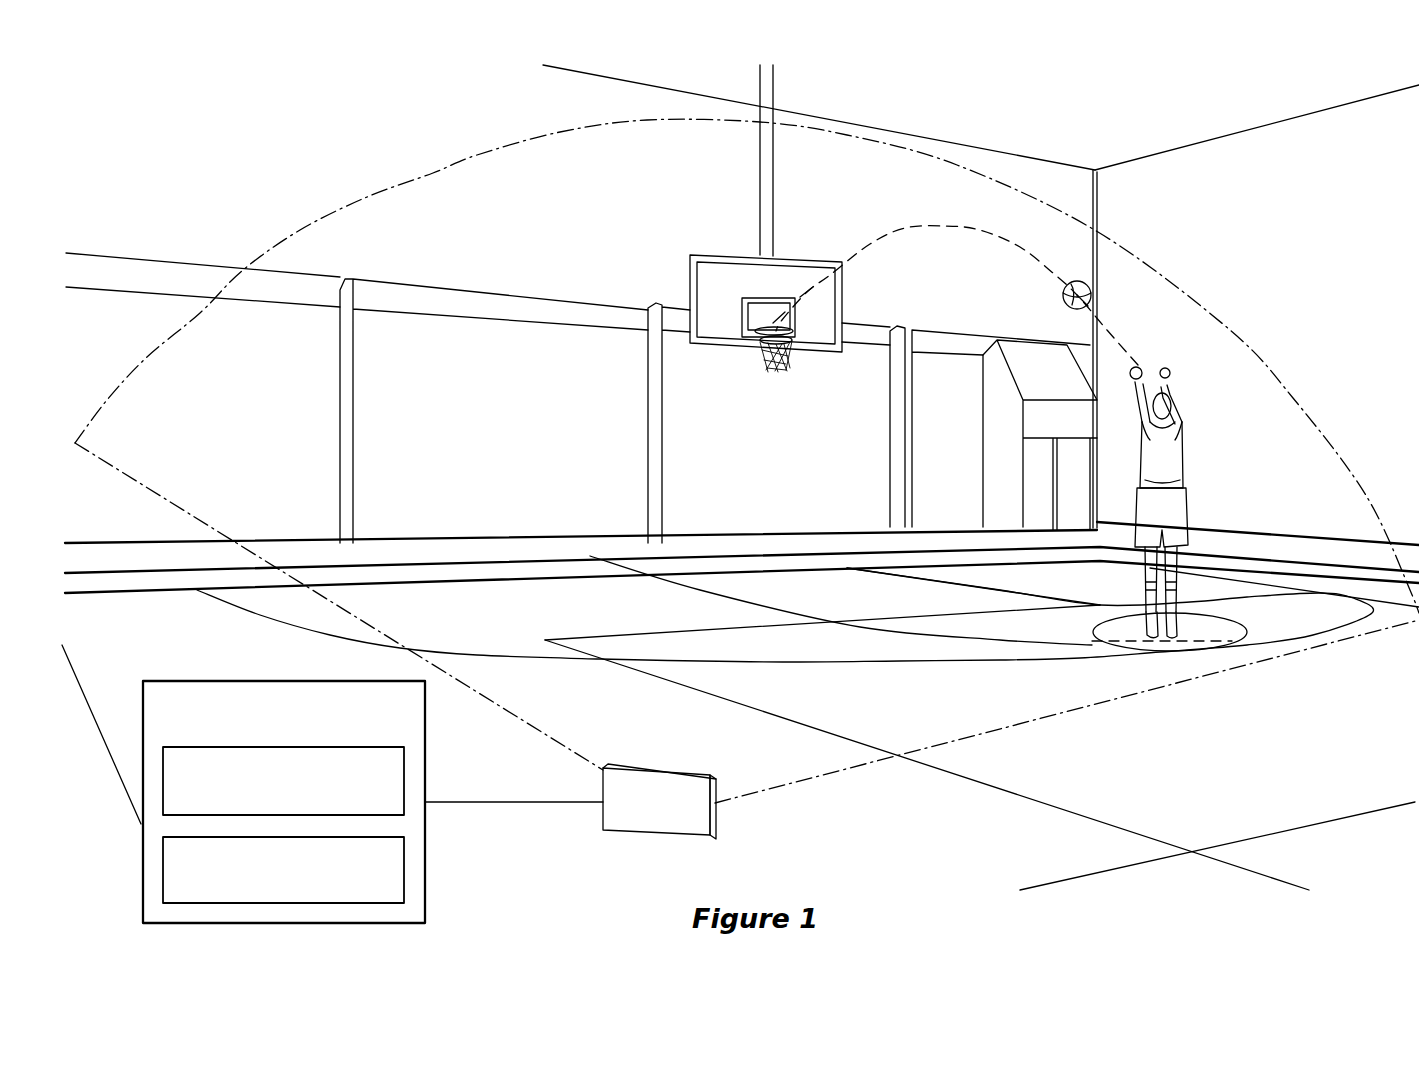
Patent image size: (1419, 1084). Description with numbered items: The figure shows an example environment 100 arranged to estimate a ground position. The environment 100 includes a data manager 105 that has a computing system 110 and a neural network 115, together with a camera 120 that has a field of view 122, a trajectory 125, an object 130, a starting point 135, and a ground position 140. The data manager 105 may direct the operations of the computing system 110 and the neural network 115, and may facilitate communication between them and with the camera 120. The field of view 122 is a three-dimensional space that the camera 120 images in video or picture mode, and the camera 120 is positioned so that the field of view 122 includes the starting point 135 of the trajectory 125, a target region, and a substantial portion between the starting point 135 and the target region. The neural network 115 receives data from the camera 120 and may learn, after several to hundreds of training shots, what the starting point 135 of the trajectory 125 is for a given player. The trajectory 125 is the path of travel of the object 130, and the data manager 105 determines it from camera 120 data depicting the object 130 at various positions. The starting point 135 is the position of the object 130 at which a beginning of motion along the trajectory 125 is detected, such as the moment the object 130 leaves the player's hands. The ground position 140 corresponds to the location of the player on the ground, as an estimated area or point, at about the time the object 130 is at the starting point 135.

The environment 100 is at (248, 146).
The data manager 105 is at (265, 740).
The computing system 110 is at (265, 804).
The neural network 115 is at (265, 892).
The camera 120 is at (672, 827).
The field of view 122 is at (1163, 694).
The trajectory 125 is at (940, 225).
The object 130 is at (1092, 291).
The starting point 135 is at (1137, 365).
The ground position 140 is at (1228, 646).